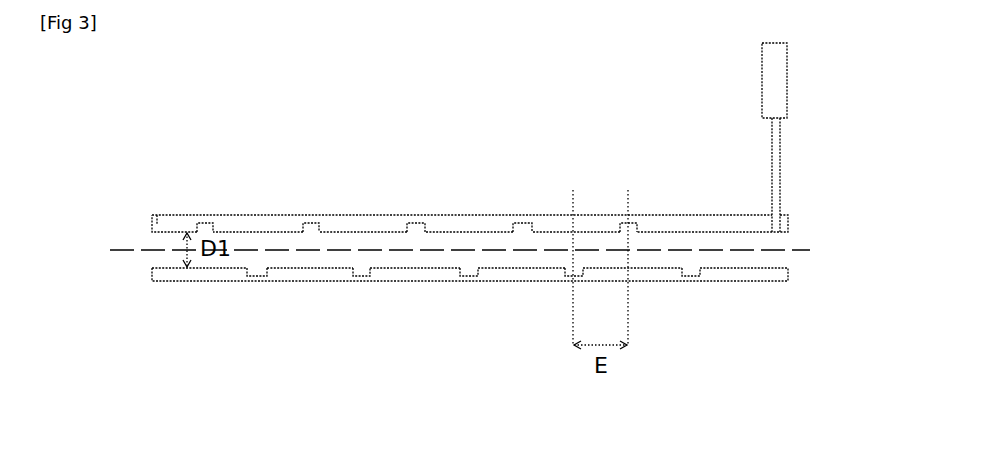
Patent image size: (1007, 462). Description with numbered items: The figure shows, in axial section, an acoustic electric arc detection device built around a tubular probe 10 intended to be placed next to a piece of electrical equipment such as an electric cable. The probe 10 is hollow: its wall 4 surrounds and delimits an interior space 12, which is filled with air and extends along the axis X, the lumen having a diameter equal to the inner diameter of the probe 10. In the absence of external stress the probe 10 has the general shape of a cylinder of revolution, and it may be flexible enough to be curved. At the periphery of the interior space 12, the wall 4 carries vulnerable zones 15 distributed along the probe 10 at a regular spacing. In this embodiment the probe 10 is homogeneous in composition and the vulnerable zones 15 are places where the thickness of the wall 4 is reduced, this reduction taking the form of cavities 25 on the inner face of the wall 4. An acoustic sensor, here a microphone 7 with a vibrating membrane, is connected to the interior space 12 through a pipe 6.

The wall 4 is at (469, 219).
The pipe 6 is at (780, 148).
The microphone 7 is at (776, 76).
The tubular probe 10 is at (436, 182).
The interior space 12 is at (362, 238).
The vulnerable zones 15 is at (626, 214).
The cavities 25 is at (298, 233).